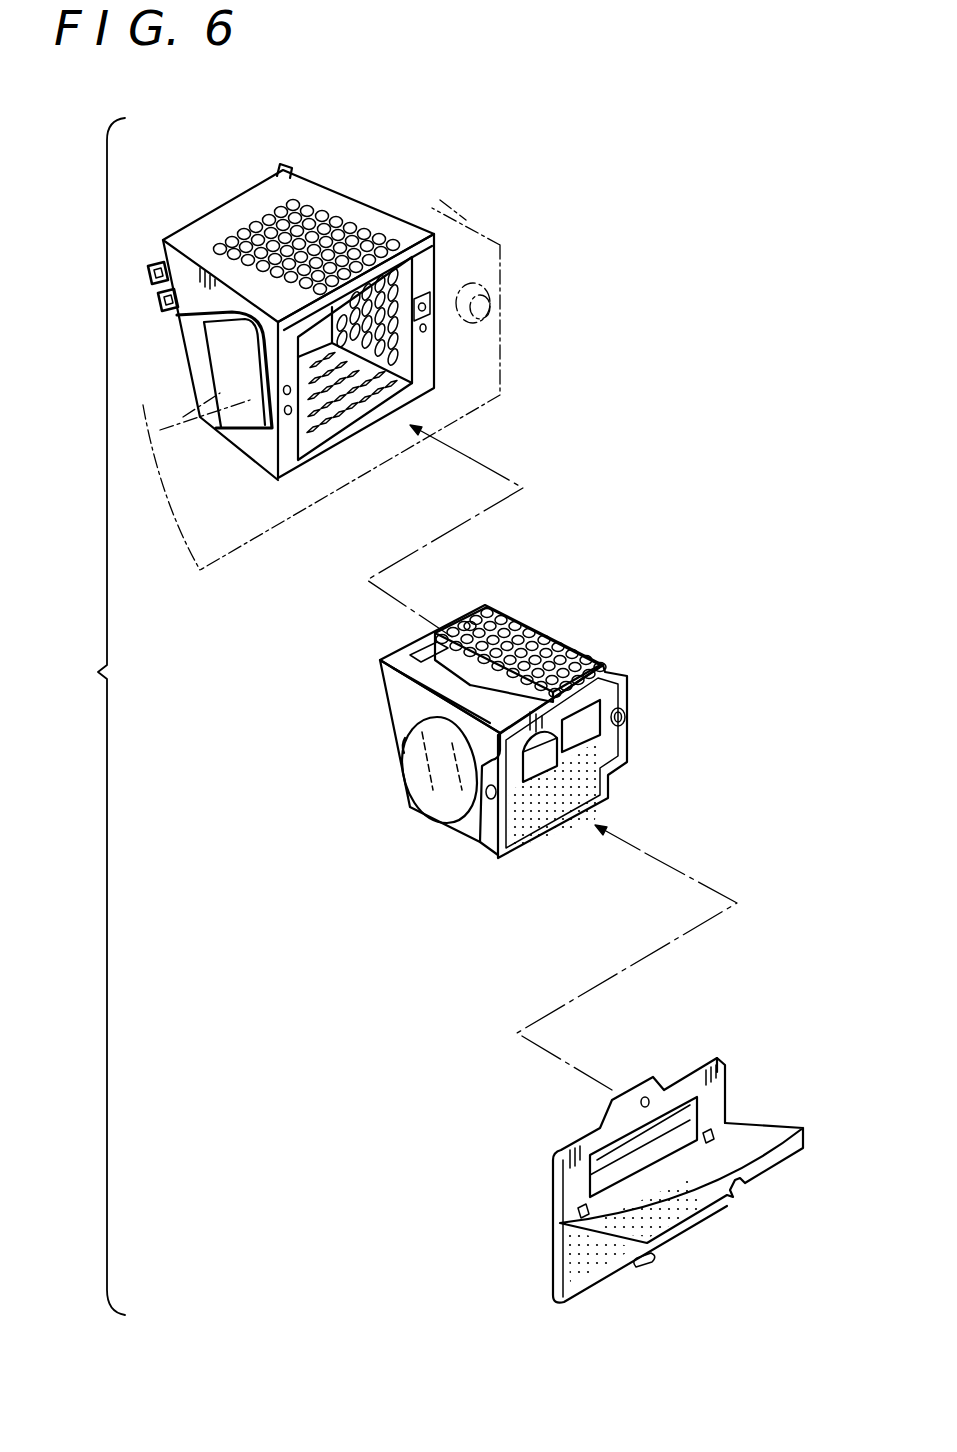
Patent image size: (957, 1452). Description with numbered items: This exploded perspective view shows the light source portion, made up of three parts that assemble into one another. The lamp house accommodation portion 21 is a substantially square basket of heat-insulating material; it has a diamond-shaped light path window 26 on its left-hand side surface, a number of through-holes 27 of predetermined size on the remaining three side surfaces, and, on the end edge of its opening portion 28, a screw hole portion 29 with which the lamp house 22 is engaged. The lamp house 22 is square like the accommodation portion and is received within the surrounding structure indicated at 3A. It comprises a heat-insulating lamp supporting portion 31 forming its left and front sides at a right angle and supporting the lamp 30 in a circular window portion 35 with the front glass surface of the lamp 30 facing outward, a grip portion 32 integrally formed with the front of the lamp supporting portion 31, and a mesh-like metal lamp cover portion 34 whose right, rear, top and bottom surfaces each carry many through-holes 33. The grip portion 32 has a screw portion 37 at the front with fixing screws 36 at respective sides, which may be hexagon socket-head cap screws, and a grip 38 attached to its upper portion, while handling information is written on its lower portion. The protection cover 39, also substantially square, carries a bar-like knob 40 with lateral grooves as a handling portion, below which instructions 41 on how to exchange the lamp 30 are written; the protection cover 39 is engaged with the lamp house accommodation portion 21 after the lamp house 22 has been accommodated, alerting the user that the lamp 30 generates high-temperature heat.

The housing recess 3A is at (483, 267).
The lamp house accommodation portion 21 is at (347, 293).
The lamp house 22 is at (502, 722).
The light path window 26 is at (232, 354).
The through-holes 27 is at (248, 233).
The opening portion 28 is at (407, 360).
The screw hole portion 29 is at (436, 303).
The lamp 30 is at (420, 770).
The lamp supporting portion 31 is at (385, 703).
The grip portion 32 is at (630, 740).
The through-holes 33 is at (478, 624).
The lamp cover portion 34 is at (503, 622).
The circular window portion 35 is at (402, 748).
The fixing screws 36 is at (628, 720).
The screw portion 37 is at (620, 712).
The grip 38 is at (545, 775).
The protection cover 39 is at (631, 1149).
The knob 40 is at (612, 1184).
The instructions 41 is at (567, 1248).